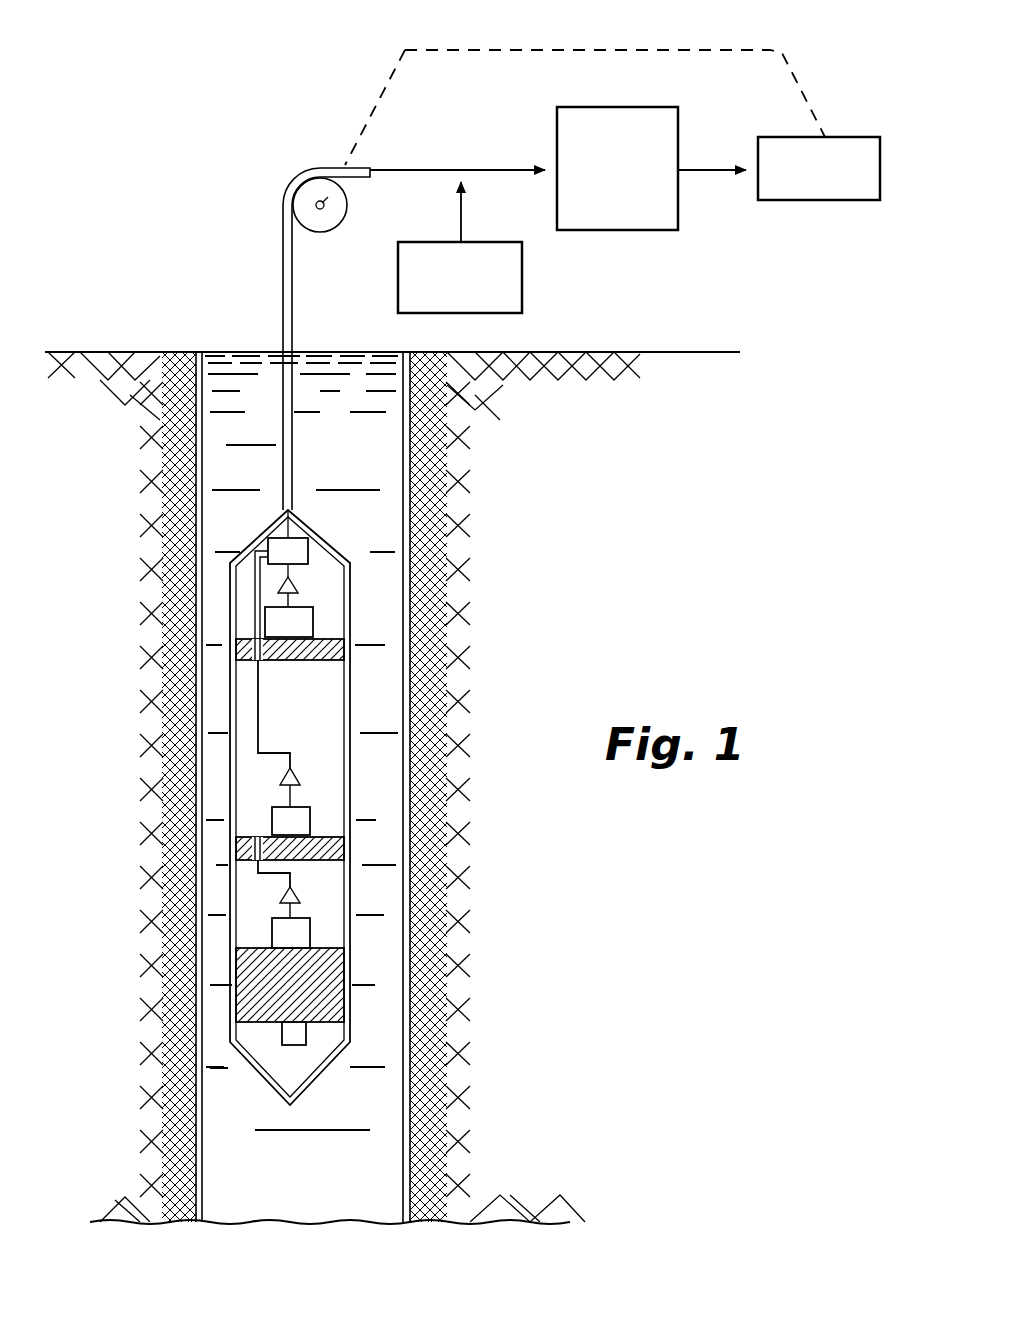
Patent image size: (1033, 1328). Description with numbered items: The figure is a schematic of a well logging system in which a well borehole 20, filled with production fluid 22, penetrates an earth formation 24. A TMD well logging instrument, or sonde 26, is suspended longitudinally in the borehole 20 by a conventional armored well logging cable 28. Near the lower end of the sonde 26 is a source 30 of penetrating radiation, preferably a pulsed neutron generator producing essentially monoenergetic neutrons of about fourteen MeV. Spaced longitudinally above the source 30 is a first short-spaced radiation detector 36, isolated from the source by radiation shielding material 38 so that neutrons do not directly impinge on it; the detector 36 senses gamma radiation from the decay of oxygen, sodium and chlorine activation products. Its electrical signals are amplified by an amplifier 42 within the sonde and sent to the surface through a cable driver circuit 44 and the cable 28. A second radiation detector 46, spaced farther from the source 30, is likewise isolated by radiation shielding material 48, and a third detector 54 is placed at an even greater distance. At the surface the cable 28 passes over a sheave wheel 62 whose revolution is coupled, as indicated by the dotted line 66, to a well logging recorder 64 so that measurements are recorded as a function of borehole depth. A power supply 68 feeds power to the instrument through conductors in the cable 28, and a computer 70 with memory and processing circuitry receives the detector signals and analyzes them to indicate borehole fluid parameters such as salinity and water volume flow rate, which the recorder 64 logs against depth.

The well borehole 20 is at (203, 430).
The production fluid 22 is at (228, 477).
The earth formation 24 is at (102, 737).
The TMD well logging instrument 26 is at (222, 600).
The well logging cable 28 is at (292, 437).
The source of penetrating radiation 30 is at (306, 1032).
The first short-spaced radiation detector 36 is at (310, 933).
The radiation shielding material 38 is at (243, 985).
The amplifier 42 is at (281, 893).
The cable driver circuit 44 is at (308, 549).
The second longitudinally spaced radiation detector 46 is at (310, 821).
The radiation shielding material 48 is at (344, 851).
The third longitudinally spaced detector 54 is at (313, 624).
The sheave wheel 62 is at (305, 194).
The well logging recorder 64 is at (835, 137).
The dotted line 66 is at (598, 50).
The power supply 68 is at (522, 294).
The computer 70 is at (655, 231).